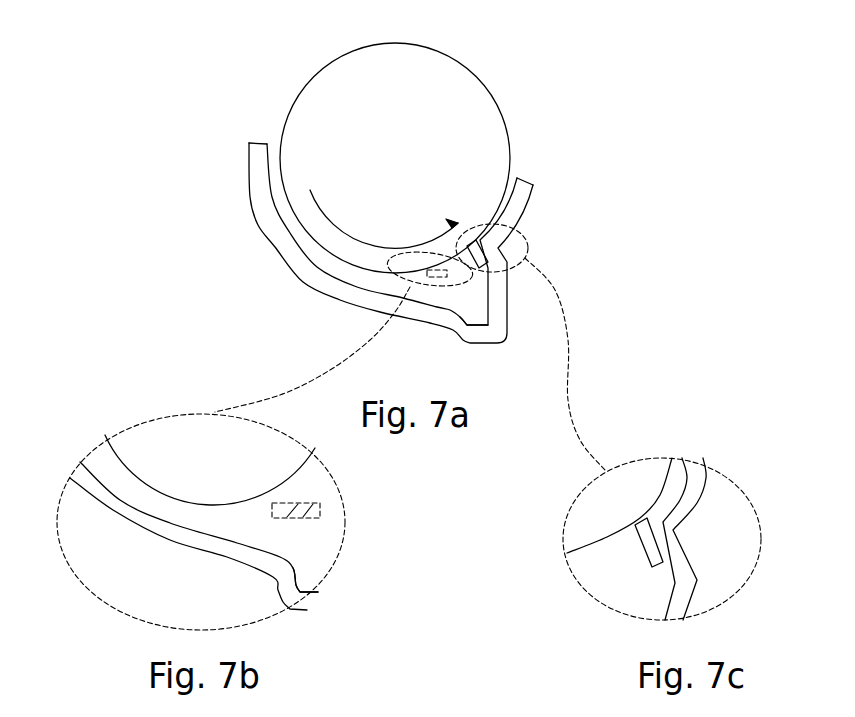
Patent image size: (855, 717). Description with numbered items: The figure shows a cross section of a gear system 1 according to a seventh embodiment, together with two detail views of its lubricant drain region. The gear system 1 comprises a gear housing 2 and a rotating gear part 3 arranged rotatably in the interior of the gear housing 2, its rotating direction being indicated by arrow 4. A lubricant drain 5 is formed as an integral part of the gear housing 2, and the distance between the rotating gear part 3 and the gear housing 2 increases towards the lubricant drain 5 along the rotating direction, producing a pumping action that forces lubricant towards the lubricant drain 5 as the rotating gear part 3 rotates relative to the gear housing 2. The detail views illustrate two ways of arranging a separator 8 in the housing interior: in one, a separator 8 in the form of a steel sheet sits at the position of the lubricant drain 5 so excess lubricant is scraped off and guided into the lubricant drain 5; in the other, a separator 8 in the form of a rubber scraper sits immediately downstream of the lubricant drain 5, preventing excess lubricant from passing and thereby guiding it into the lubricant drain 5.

In FIG. 7A, the gear system 1 is at (500, 70).
In FIG. 7A, the gear housing 2 is at (267, 187).
In FIG. 7B, the gear housing 2 is at (110, 513).
In FIG. 7C, the gear housing 2 is at (687, 600).
In FIG. 7A, the rotating gear part 3 is at (357, 50).
In FIG. 7B, the rotating gear part 3 is at (107, 463).
In FIG. 7C, the rotating gear part 3 is at (657, 477).
In FIG. 7A, the arrow 4 is at (343, 233).
In FIG. 7A, the lubricant drain 5 is at (477, 312).
In FIG. 7B, the lubricant drain 5 is at (297, 550).
In FIG. 7C, the lubricant drain 5 is at (630, 590).
In FIG. 7A, the separator 8 is at (457, 258).
In FIG. 7B, the separator 8 is at (300, 518).
In FIG. 7C, the separator 8 is at (640, 540).